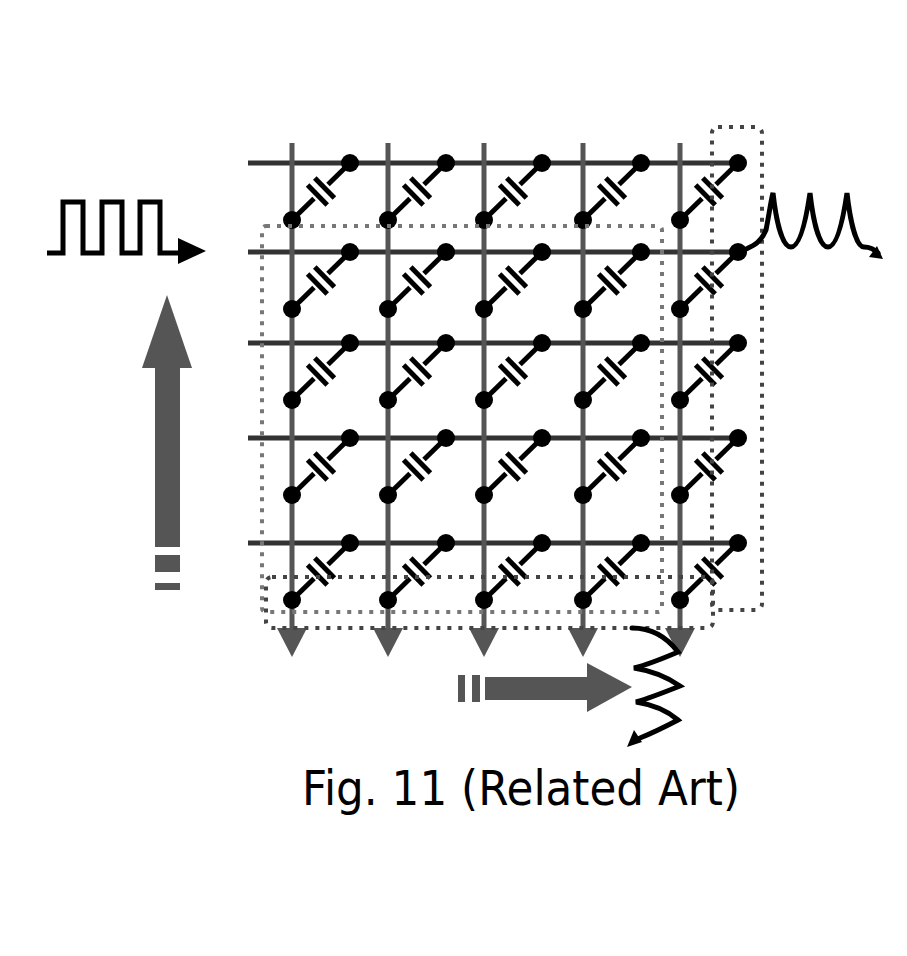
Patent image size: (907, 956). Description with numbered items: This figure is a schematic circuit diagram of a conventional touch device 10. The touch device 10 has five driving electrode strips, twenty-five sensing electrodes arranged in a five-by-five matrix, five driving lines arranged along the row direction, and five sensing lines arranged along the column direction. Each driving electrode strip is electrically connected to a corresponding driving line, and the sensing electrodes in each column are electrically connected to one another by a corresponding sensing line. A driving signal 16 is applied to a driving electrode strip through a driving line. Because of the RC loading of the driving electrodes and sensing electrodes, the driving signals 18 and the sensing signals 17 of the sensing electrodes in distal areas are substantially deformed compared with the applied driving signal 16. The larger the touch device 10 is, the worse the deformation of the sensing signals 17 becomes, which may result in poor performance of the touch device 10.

The touch device 10 is at (455, 61).
The driving signal 16 is at (126, 212).
The sensing signals 17 is at (679, 687).
The driving signals 18 is at (813, 210).